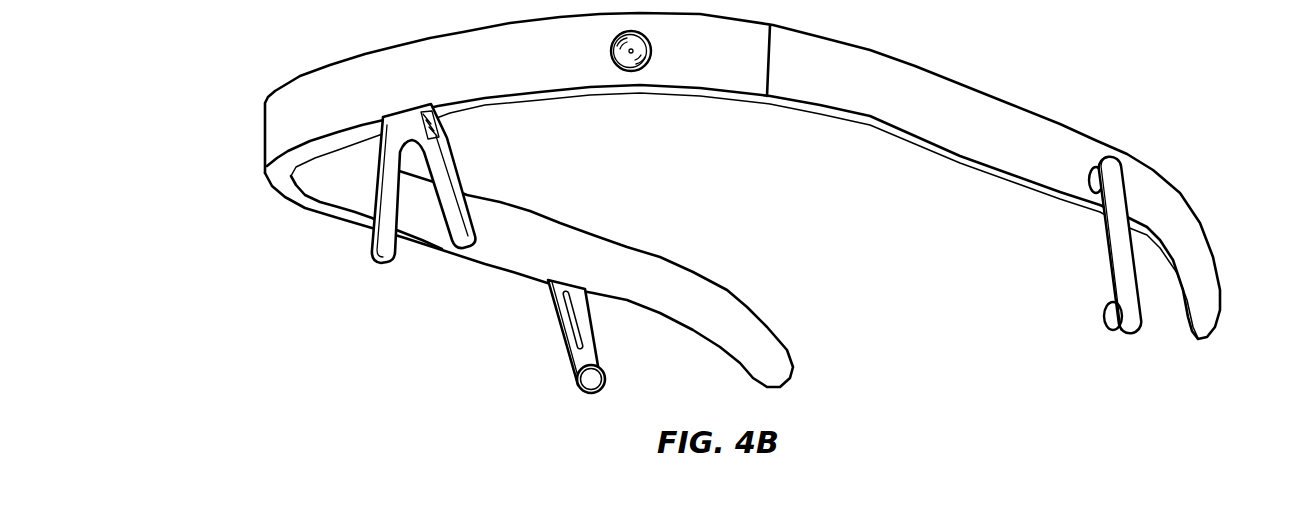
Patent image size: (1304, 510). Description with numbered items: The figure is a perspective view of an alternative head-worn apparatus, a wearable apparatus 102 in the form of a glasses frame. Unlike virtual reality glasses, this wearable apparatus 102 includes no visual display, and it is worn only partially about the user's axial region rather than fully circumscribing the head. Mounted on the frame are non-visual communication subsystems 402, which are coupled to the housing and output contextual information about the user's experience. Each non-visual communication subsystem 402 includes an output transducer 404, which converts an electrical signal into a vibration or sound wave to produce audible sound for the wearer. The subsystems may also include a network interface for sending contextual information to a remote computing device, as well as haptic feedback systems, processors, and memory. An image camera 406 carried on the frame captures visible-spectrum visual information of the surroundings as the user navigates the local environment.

The wearable apparatus 102 is at (263, 133).
The non-visual communication subsystem 402 is at (546, 281).
The output transducer 404 is at (574, 379).
The image camera 406 is at (630, 71).